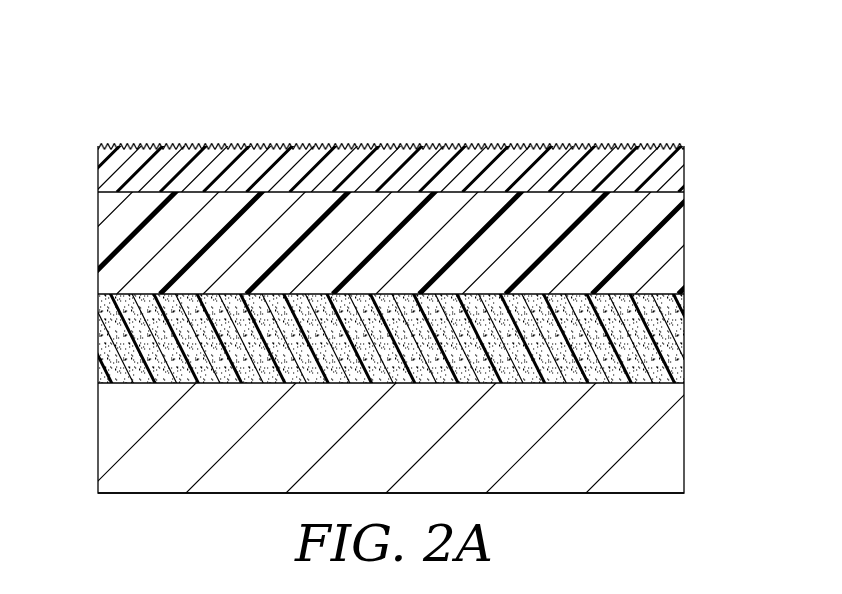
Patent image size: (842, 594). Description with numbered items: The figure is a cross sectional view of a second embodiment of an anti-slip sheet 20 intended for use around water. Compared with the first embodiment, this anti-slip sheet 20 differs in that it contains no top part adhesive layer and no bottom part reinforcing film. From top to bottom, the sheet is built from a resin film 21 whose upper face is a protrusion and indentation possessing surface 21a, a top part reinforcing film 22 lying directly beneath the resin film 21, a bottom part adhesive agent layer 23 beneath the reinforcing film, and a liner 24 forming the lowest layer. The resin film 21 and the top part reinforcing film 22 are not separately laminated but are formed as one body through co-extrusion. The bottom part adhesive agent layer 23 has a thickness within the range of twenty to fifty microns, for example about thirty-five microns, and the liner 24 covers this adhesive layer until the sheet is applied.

The anti-slip sheet 20 is at (112, 92).
The protrusion and indentation possessing surface 21a is at (663, 145).
The resin film 21 is at (685, 168).
The top part reinforcing film 22 is at (683, 241).
The bottom part adhesive agent layer 23 is at (683, 338).
The liner 24 is at (675, 443).